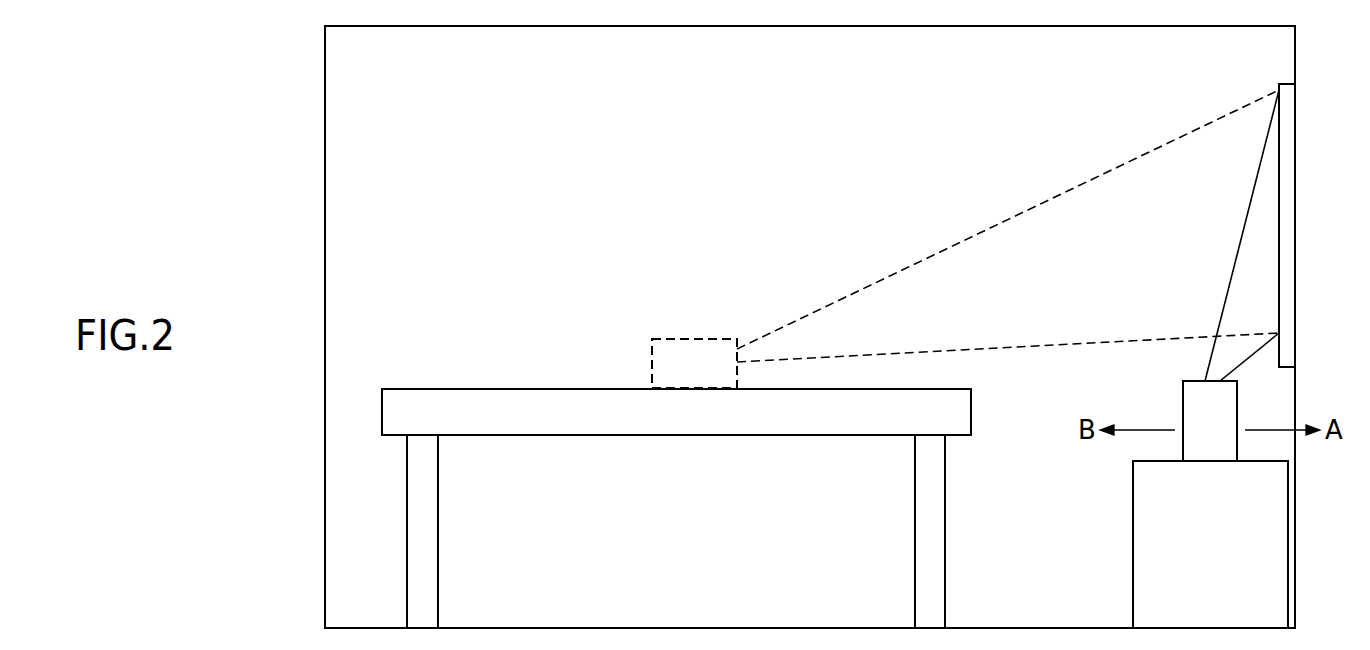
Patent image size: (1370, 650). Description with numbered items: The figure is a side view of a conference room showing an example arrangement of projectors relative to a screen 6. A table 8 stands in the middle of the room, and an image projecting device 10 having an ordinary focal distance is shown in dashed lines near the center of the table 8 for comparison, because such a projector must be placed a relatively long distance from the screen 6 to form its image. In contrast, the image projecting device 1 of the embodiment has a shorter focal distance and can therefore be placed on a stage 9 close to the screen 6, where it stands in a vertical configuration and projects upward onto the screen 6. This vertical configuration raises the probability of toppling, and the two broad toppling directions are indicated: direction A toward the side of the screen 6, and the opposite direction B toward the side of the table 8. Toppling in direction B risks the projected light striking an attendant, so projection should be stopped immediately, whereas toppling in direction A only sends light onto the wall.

The image projecting device 1 is at (1183, 408).
The screen 6 is at (1287, 232).
The table 8 is at (492, 402).
The stage 9 is at (1145, 517).
The image projecting device 10 is at (690, 335).